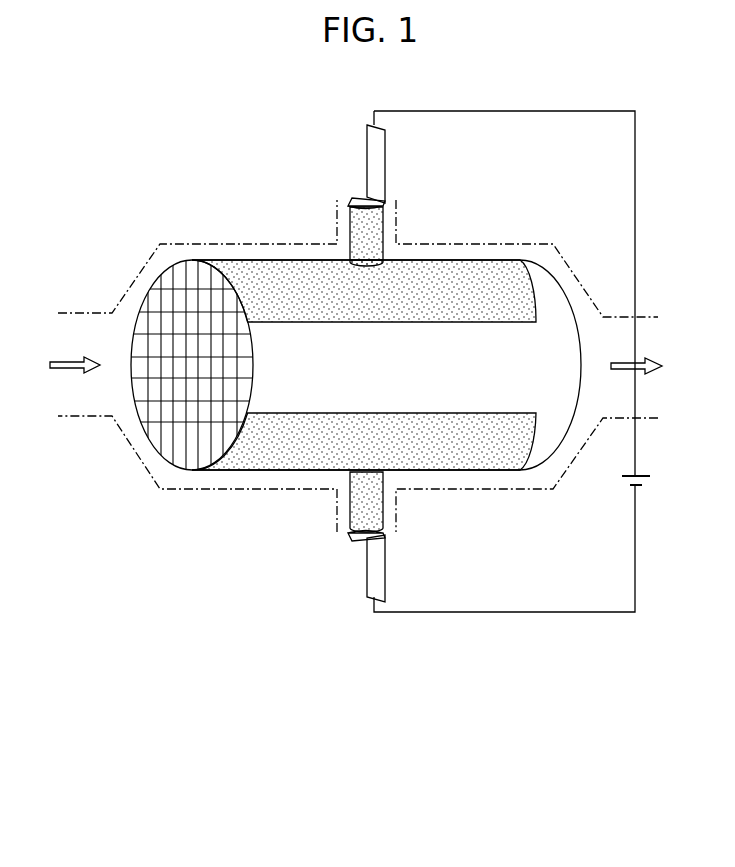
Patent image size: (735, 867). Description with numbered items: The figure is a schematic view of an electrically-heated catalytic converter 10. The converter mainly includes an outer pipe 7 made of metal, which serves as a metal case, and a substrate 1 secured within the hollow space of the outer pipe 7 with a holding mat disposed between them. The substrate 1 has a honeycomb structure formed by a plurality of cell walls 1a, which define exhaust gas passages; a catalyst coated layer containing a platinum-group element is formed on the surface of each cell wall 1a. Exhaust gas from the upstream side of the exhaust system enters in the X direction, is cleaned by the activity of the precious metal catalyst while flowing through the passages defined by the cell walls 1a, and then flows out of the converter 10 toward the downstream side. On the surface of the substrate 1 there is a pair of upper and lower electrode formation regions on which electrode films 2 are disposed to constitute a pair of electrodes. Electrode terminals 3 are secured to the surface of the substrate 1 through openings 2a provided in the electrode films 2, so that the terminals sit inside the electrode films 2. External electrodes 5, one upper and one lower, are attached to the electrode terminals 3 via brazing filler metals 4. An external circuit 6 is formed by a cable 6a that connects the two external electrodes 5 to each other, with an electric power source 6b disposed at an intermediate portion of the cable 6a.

The electrically-heated catalytic converter 10 is at (118, 158).
The substrate 1 is at (230, 268).
The cell walls 1a is at (193, 430).
The electrode films 2 is at (295, 268).
The openings 2a is at (349, 262).
The electrode terminals 3 is at (352, 225).
The brazing filler metals 4 is at (397, 207).
The external electrodes 5 is at (373, 166).
The external circuit 6 is at (705, 472).
The cable 6a is at (636, 517).
The electric power source 6b is at (650, 475).
The outer pipe 7 is at (140, 272).